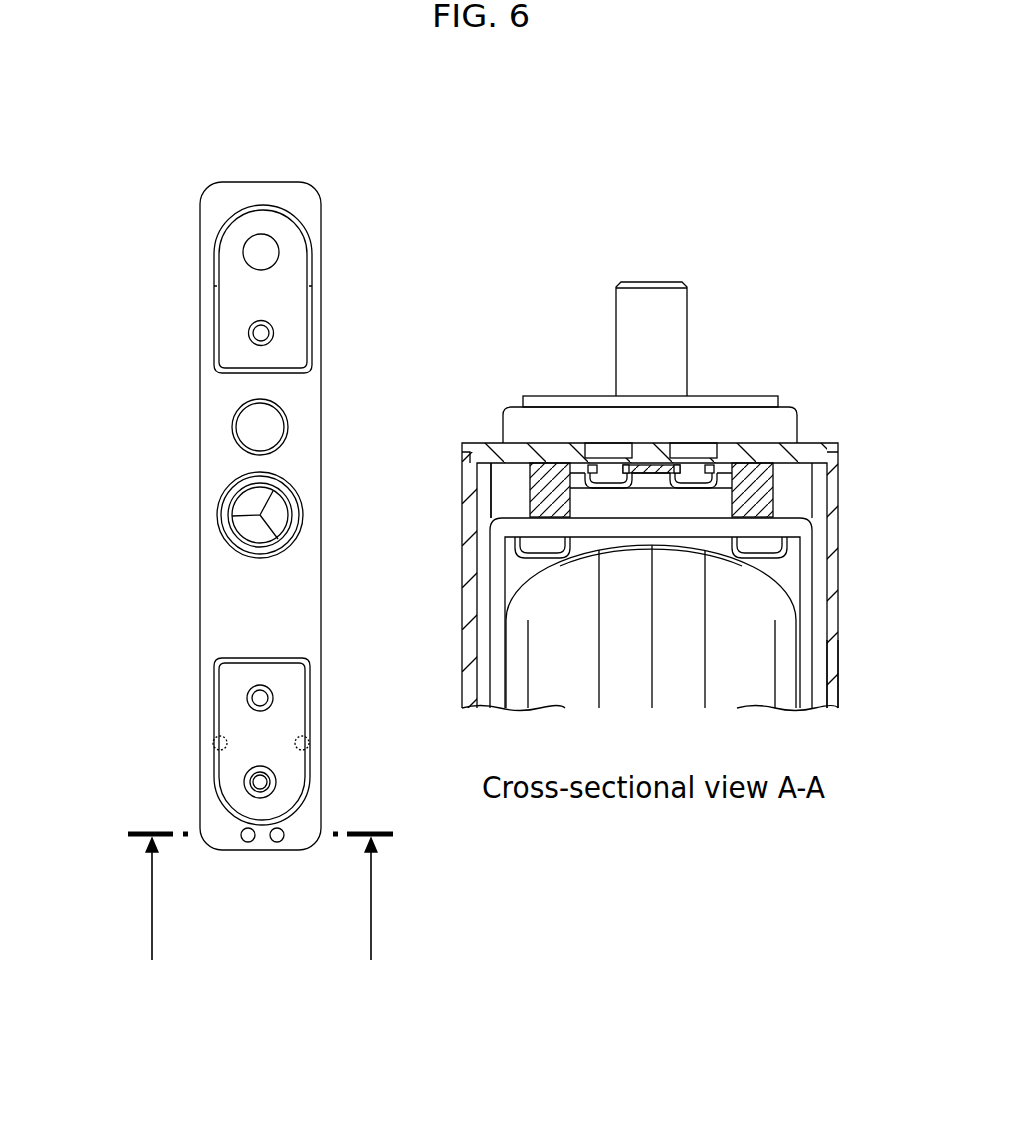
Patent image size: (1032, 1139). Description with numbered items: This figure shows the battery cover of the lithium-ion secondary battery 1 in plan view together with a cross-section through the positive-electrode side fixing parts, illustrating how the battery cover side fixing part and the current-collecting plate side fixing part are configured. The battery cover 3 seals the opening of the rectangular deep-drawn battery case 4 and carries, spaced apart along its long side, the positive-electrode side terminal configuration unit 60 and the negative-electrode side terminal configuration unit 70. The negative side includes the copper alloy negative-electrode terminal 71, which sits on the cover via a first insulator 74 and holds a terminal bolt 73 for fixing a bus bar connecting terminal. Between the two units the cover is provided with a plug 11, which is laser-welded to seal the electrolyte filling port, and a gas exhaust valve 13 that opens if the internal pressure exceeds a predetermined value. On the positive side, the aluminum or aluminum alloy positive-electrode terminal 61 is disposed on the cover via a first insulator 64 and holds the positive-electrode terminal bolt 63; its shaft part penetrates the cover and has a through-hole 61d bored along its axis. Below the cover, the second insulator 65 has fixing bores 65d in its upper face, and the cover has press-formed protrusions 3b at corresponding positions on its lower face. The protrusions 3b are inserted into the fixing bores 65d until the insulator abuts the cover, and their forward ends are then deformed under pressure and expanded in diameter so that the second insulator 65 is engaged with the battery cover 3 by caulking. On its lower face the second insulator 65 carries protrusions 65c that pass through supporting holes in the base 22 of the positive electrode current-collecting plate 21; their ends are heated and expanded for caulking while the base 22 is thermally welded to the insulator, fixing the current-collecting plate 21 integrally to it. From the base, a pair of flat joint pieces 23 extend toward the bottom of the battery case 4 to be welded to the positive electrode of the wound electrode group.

The lithium-ion secondary battery 1 is at (263, 162).
The battery cover 3 is at (210, 595).
The protrusions 3b is at (226, 741).
The battery case 4 is at (833, 683).
The plug 11 is at (248, 428).
The gas exhaust valve 13 is at (225, 514).
The positive electrode current-collecting plate 21 is at (497, 597).
The base 22 is at (790, 515).
The joint pieces 23 is at (497, 645).
The positive-electrode side terminal configuration unit 60 is at (140, 747).
The positive-electrode terminal 61 is at (235, 672).
The through-hole 61d is at (250, 782).
The positive-electrode terminal bolt 63 is at (252, 698).
The first insulator 64 is at (218, 720).
The second insulator 65 is at (797, 492).
The protrusions 65c is at (540, 545).
The fixing bores 65d is at (606, 484).
The negative-electrode side terminal configuration unit 70 is at (154, 281).
The negative-electrode terminal 71 is at (229, 360).
The terminal bolt 73 is at (251, 335).
The first insulator 74 is at (218, 247).